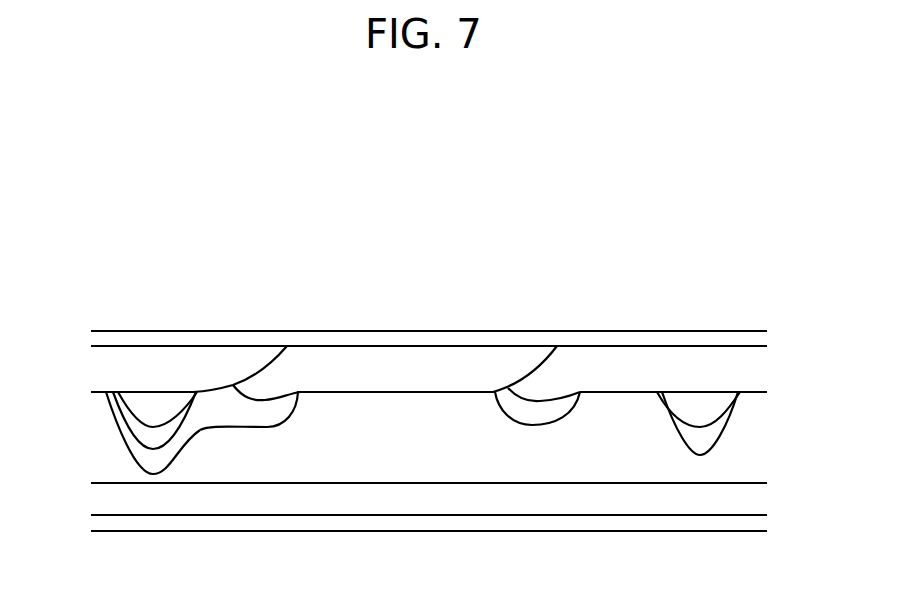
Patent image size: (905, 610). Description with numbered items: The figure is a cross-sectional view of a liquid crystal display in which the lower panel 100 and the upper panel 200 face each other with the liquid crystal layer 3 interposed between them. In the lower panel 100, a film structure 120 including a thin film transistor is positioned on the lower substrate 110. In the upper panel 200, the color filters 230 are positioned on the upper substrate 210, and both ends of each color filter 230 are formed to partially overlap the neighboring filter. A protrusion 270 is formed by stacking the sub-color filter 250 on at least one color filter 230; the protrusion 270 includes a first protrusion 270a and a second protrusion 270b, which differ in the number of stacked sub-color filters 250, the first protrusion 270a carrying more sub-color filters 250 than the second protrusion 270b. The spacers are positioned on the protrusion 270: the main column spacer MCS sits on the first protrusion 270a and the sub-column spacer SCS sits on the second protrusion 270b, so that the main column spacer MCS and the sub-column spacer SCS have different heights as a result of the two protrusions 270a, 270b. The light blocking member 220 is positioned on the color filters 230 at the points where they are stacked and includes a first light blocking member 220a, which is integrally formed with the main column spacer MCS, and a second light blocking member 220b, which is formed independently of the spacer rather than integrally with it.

The lower panel 100 is at (424, 511).
The lower substrate 110 is at (100, 527).
The film structure 120 is at (100, 498).
The upper panel 200 is at (424, 340).
The upper substrate 210 is at (100, 337).
The color filters 230 is at (225, 368).
The liquid crystal layer 3 is at (413, 338).
The light blocking member 220 is at (390, 330).
The first light blocking member 220a is at (268, 417).
The second light blocking member 220b is at (522, 417).
The protrusion 270 is at (382, 321).
The first protrusion 270a is at (123, 437).
The second protrusion 270b is at (672, 413).
The sub-color filter 250 is at (138, 407).
The main column spacer MCS is at (145, 461).
The sub-column spacer SCS is at (688, 443).